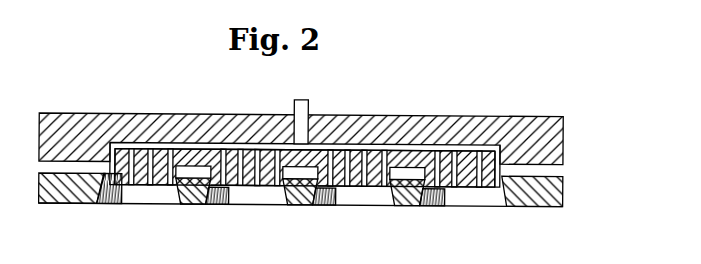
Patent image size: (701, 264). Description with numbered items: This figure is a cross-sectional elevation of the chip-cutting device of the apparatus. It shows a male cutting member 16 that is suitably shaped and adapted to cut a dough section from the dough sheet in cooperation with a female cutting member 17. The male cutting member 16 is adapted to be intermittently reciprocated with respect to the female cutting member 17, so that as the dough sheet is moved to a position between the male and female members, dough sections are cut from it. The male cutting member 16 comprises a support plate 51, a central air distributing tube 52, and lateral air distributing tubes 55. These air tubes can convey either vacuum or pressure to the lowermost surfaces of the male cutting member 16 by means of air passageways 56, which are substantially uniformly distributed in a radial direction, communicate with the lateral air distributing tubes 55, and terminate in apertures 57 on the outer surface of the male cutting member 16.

The support plate 51 is at (548, 142).
The central air distributing tube 52 is at (309, 104).
The lateral air distributing tubes 55 is at (142, 147).
The air passageways 56 is at (131, 184).
The apertures 57 is at (128, 172).
The male cutting member 16 is at (462, 184).
The female cutting member 17 is at (321, 205).